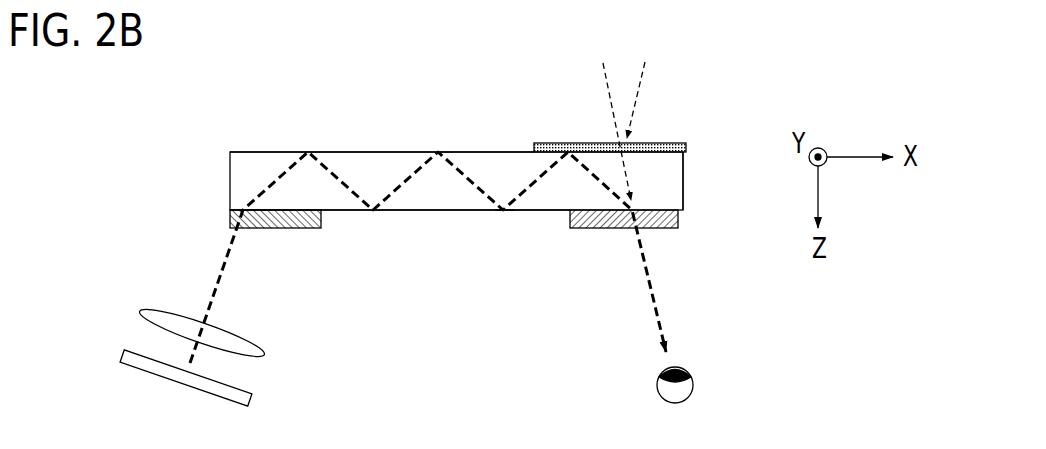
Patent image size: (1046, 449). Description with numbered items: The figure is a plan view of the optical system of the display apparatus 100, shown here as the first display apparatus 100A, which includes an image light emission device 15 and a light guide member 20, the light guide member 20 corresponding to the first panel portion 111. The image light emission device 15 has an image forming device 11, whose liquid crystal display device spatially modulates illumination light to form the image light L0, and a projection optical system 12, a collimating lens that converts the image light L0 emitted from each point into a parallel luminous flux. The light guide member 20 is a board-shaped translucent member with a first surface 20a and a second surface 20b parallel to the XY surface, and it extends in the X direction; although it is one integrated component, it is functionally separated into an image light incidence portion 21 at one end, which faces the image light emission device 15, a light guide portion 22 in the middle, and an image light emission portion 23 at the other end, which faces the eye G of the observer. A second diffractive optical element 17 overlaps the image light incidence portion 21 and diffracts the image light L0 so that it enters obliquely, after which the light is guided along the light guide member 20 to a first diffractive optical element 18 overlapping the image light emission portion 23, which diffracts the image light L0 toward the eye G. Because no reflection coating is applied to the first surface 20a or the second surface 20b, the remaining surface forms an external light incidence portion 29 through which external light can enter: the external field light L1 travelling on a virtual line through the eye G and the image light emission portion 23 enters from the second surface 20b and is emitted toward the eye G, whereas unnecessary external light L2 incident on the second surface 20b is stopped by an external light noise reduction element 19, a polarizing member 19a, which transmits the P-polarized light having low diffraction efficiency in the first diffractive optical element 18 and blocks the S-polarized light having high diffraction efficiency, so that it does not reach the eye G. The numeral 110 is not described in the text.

The display apparatus 100 is at (216, 54).
The first display apparatus 100A is at (285, 54).
The image forming device 11 is at (252, 397).
The projection optical system 12 is at (263, 355).
The image light emission device 15 is at (333, 357).
The second diffractive optical element 17 is at (293, 228).
The first diffractive optical element 18 is at (678, 225).
The external light noise reduction element 19 is at (567, 143).
The polarizing member 19a is at (610, 110).
The light guide member 20 is at (403, 214).
The light guide 110 is at (456, 188).
The first panel portion 111 is at (456, 188).
The first surface 20a is at (550, 212).
The second surface 20b is at (412, 152).
The image light incidence portion 21 is at (244, 204).
The light guide portion 22 is at (374, 168).
The image light emission portion 23 is at (663, 203).
The external light incidence portion 29 is at (525, 185).
The image light L0 is at (220, 290).
The external field light L1 is at (613, 118).
The unnecessary external light L2 is at (651, 100).
The eye of the observer G is at (693, 380).